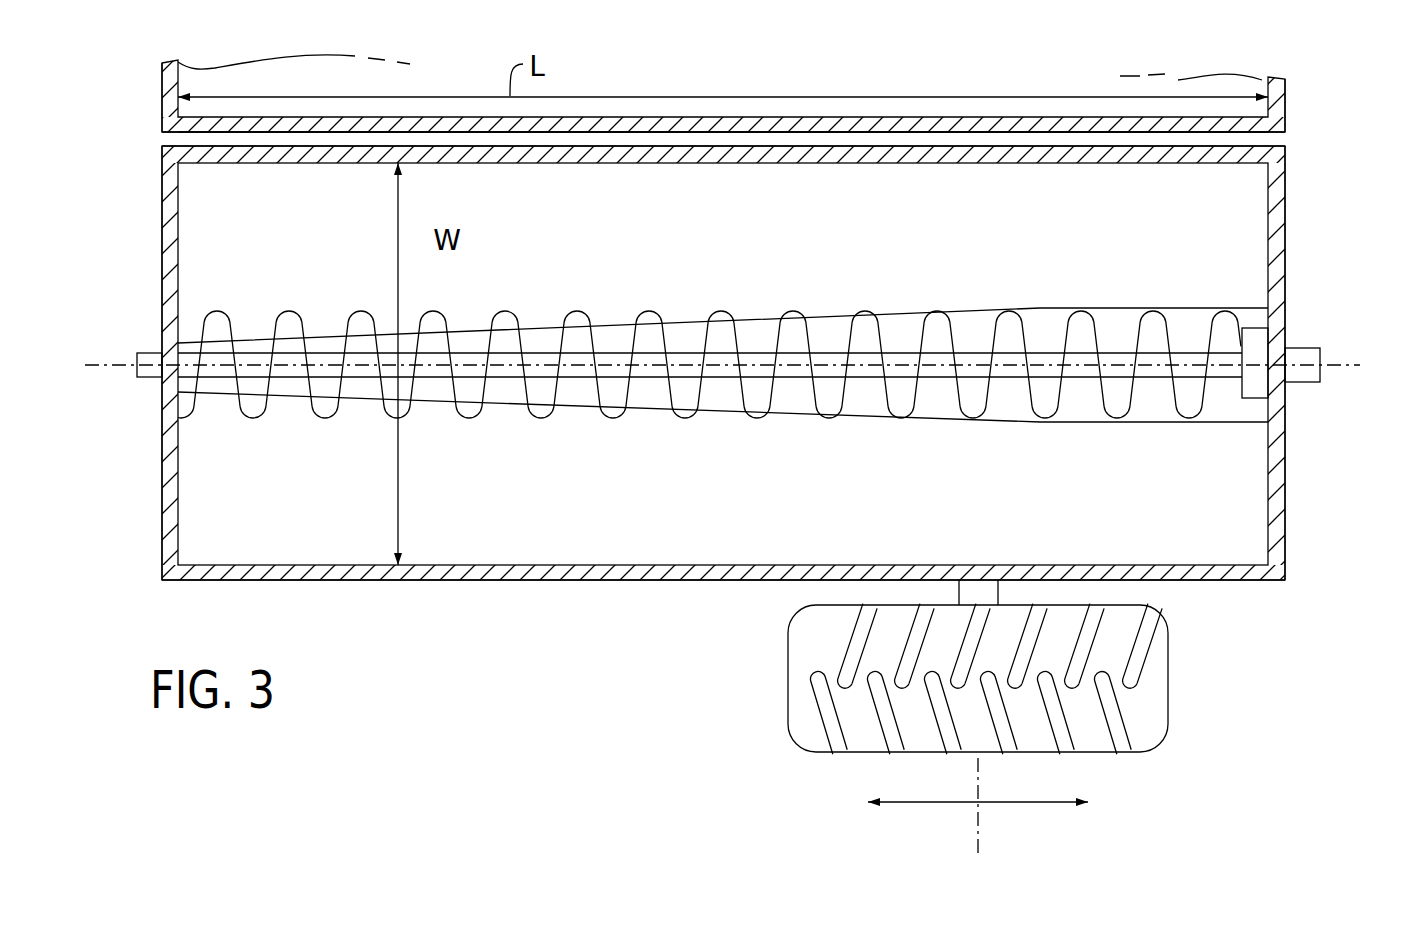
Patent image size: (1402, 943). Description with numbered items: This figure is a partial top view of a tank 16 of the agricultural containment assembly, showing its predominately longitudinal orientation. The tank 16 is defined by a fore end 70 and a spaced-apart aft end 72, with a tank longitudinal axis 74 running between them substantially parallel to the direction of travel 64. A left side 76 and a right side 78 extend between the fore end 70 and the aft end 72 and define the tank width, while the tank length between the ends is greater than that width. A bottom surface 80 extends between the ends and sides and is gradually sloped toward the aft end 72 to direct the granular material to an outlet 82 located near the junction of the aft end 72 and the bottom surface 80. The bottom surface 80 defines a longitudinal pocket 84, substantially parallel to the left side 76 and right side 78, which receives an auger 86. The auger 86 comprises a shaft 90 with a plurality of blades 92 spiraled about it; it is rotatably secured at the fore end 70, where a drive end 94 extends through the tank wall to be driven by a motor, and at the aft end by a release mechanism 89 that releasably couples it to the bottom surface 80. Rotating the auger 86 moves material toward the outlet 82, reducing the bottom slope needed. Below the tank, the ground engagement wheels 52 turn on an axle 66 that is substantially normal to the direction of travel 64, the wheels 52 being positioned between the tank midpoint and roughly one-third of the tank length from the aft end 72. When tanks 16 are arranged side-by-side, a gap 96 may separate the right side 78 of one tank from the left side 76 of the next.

The tank 16 is at (714, 325).
The ground engagement wheels 52 is at (1100, 752).
The direction of travel 64 is at (937, 802).
The axle 66 is at (980, 835).
The fore end 70 is at (162, 98).
The aft end 72 is at (1285, 97).
The tank longitudinal axis 74 is at (705, 320).
The left side 76 is at (1285, 132).
The right side 78 is at (177, 146).
The bottom surface 80 is at (226, 206).
The outlet 82 is at (1303, 348).
The longitudinal pocket 84 is at (895, 313).
The auger 86 is at (709, 330).
The release mechanism 89 is at (1252, 328).
The shaft 90 is at (250, 343).
The blades 92 is at (253, 418).
The drive end 94 is at (148, 353).
The gap 96 is at (162, 137).